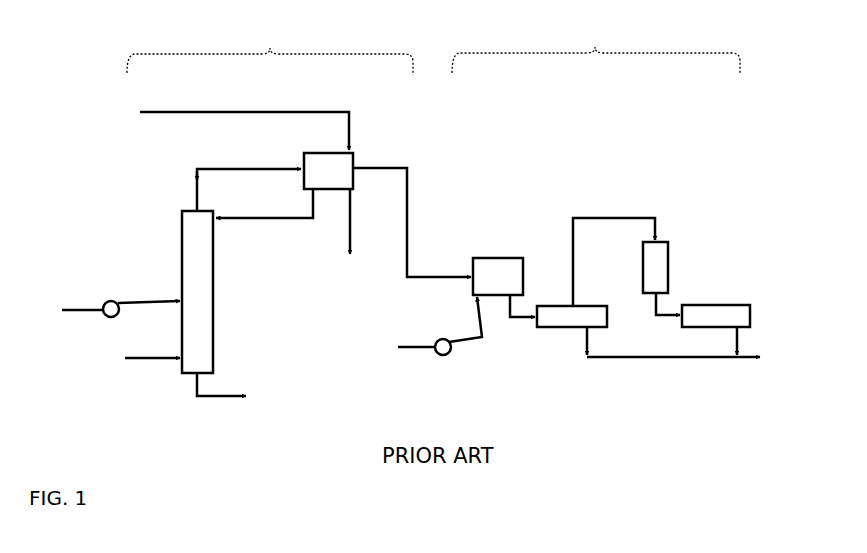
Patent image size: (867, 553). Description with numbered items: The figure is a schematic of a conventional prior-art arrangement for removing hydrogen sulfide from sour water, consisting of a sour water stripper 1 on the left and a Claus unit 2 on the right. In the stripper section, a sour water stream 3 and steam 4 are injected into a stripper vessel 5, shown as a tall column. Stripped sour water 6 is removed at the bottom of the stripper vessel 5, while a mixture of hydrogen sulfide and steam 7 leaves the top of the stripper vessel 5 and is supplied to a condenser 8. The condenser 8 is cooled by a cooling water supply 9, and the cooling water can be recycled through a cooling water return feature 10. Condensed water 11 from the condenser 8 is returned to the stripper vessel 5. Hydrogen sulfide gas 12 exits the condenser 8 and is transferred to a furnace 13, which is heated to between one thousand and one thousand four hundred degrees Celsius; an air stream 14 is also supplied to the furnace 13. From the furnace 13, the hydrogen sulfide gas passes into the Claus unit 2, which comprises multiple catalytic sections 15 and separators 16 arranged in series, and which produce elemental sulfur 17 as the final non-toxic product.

The sour water stripper 1 is at (270, 44).
The Claus unit 2 is at (595, 45).
The sour water stream 3 is at (113, 310).
The steam 4 is at (142, 358).
The stripper vessel 5 is at (197, 292).
The stripped sour water 6 is at (234, 390).
The mixture of hydrogen sulfide and steam 7 is at (238, 181).
The condenser 8 is at (328, 171).
The cooling water supply 9 is at (234, 127).
The cooling water return feature 10 is at (348, 233).
The condensed water 11 is at (264, 218).
The hydrogen sulfide gas 12 is at (412, 222).
The furnace 13 is at (504, 287).
The air stream 14 is at (425, 328).
The catalytic sections 15 is at (643, 262).
The separators 16 is at (662, 342).
The elemental sulfur 17 is at (762, 358).